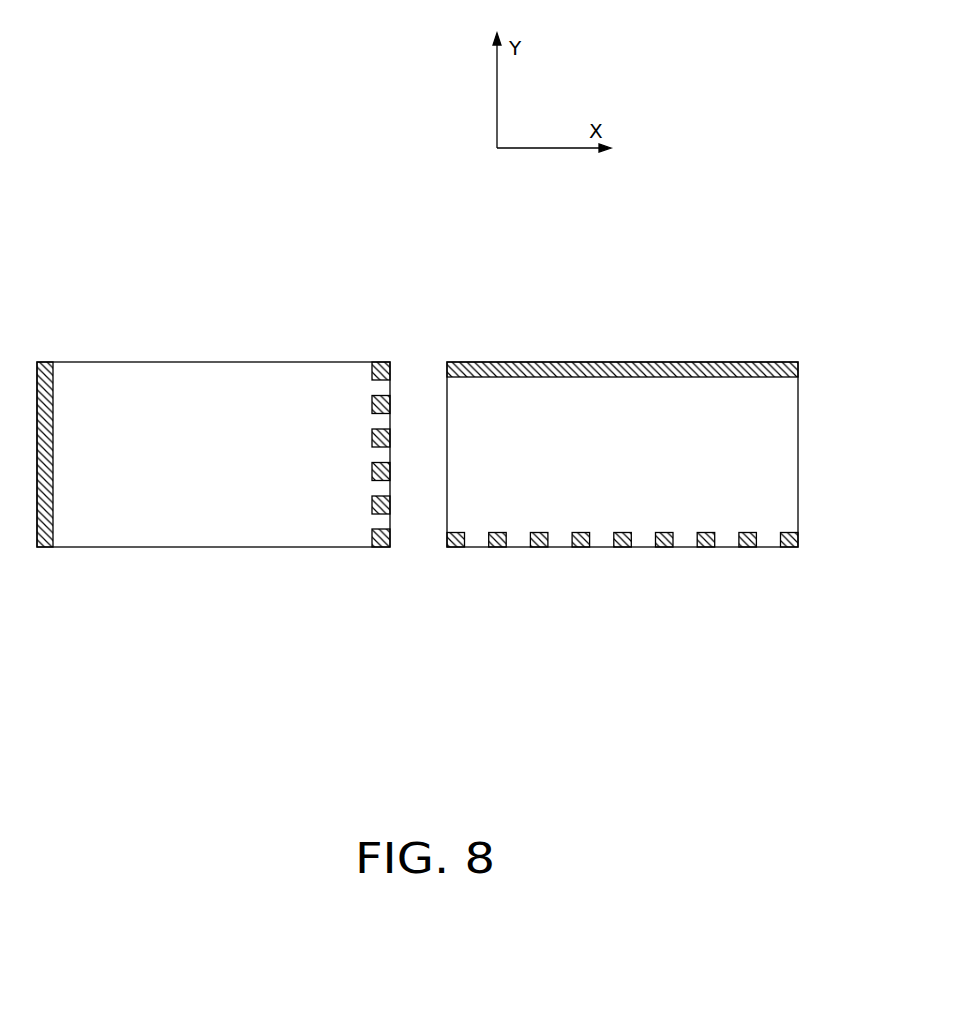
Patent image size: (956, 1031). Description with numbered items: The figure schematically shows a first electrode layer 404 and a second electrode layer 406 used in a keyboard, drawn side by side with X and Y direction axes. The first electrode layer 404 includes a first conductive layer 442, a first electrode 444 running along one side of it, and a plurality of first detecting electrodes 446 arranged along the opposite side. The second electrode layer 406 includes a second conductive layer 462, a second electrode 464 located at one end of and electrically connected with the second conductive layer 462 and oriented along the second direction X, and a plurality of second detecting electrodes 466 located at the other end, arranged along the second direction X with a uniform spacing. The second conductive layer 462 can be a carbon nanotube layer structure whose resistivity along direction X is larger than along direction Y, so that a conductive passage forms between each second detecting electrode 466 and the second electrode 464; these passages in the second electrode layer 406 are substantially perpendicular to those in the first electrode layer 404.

The first electrode layer 404 is at (224, 298).
The first conductive layer 442 is at (252, 361).
The first electrode 444 is at (45, 361).
The first detecting electrodes 446 is at (373, 361).
The second electrode layer 406 is at (643, 332).
The second conductive layer 462 is at (798, 490).
The second electrode 464 is at (740, 370).
The second detecting electrodes 466 is at (583, 548).